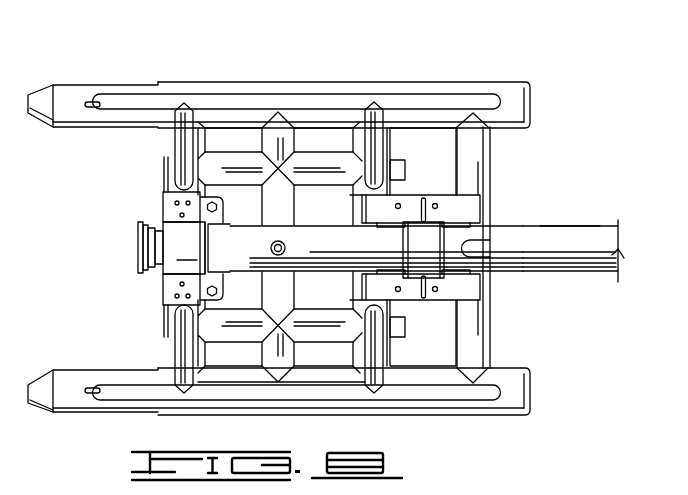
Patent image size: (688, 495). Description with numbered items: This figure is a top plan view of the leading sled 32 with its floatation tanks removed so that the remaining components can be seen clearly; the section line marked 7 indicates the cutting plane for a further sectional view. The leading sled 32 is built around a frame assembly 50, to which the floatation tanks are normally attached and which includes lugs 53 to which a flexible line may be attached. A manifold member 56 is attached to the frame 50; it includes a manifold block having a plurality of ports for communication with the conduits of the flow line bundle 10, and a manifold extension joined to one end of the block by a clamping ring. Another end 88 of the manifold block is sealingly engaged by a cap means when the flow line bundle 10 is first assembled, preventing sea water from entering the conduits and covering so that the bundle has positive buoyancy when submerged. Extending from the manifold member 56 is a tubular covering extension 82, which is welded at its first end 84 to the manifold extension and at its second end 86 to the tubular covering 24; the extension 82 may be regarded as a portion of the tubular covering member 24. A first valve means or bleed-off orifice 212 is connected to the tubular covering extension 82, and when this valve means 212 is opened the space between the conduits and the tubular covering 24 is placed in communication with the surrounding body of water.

The flow line bundle 10 is at (562, 224).
The tubular covering 24 is at (523, 224).
The leading sled 32 is at (345, 77).
The frame assembly 50 is at (173, 347).
The lugs 53 is at (85, 108).
The manifold member 56 is at (163, 218).
The tubular covering extension 82 is at (315, 259).
The first end 84 is at (228, 263).
The second end 86 is at (492, 233).
The end of manifold block 88 is at (137, 268).
The first valve means 212 is at (287, 244).
The section line 7 is at (108, 250).